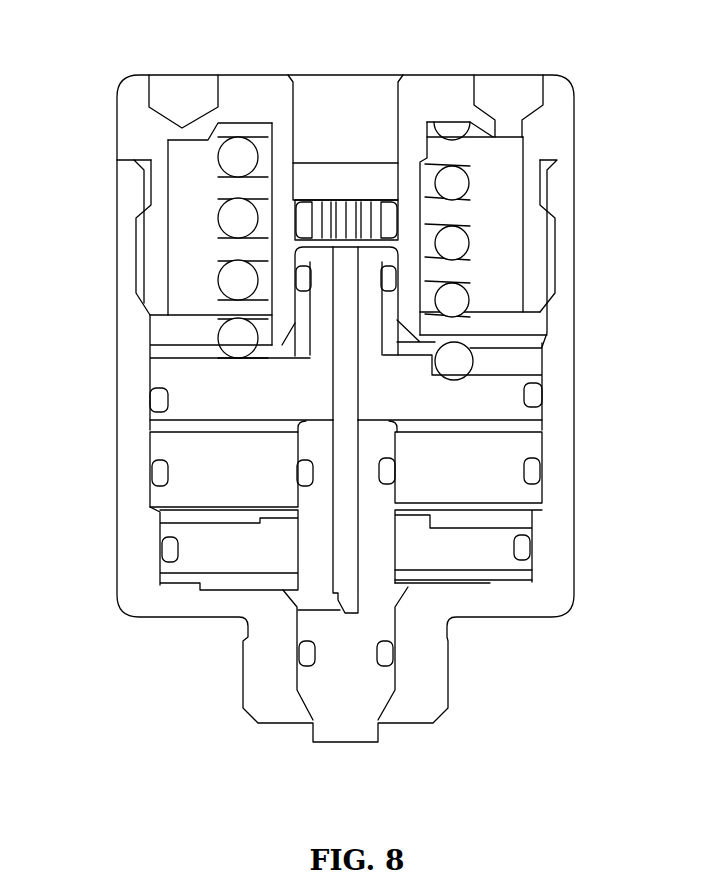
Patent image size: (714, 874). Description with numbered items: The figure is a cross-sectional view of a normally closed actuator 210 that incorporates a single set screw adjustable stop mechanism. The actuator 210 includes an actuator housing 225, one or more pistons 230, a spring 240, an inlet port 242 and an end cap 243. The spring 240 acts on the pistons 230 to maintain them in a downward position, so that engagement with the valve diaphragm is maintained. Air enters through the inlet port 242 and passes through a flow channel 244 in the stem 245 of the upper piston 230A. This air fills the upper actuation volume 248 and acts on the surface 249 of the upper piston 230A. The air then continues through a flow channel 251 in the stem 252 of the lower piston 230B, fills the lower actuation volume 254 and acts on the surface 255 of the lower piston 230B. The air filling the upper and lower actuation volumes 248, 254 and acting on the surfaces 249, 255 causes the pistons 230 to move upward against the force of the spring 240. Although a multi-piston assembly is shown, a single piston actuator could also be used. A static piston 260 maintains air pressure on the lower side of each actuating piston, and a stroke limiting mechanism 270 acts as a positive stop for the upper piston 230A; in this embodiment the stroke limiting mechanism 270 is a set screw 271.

The actuator 210 is at (598, 312).
The actuator housing 225 is at (567, 455).
The pistons 230 is at (150, 400).
The upper piston 230A is at (540, 383).
The lower piston 230B is at (527, 563).
The spring 240 is at (458, 183).
The inlet port 242 is at (330, 105).
The end cap 243 is at (565, 116).
The flow channel 244 is at (346, 383).
The stem 245 is at (375, 287).
The upper actuation volume 248 is at (533, 426).
The surface 249 is at (521, 421).
The flow channel 251 is at (343, 548).
The stem 252 is at (317, 450).
The lower actuation volume 254 is at (480, 587).
The surface 255 is at (463, 587).
The static piston 260 is at (527, 495).
The stroke limiting mechanism 270 is at (272, 239).
The set screw 271 is at (380, 213).